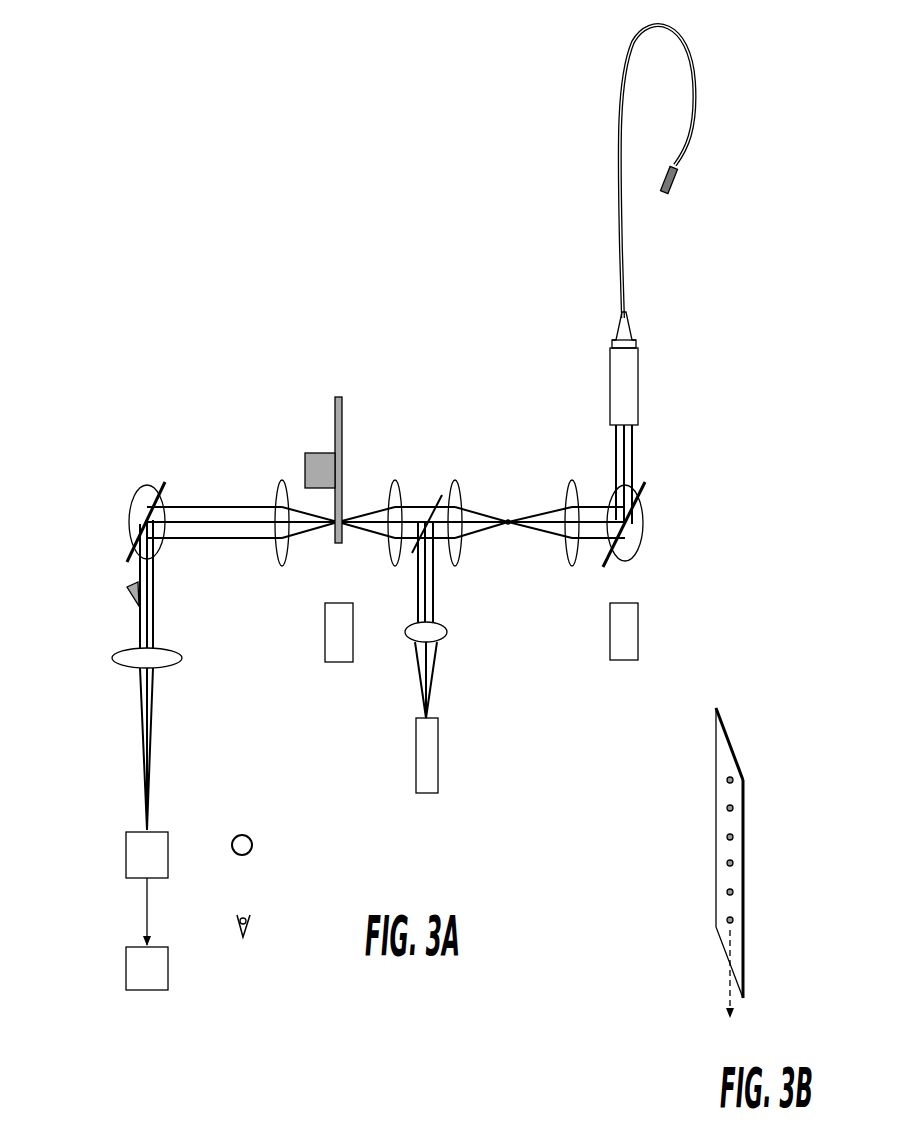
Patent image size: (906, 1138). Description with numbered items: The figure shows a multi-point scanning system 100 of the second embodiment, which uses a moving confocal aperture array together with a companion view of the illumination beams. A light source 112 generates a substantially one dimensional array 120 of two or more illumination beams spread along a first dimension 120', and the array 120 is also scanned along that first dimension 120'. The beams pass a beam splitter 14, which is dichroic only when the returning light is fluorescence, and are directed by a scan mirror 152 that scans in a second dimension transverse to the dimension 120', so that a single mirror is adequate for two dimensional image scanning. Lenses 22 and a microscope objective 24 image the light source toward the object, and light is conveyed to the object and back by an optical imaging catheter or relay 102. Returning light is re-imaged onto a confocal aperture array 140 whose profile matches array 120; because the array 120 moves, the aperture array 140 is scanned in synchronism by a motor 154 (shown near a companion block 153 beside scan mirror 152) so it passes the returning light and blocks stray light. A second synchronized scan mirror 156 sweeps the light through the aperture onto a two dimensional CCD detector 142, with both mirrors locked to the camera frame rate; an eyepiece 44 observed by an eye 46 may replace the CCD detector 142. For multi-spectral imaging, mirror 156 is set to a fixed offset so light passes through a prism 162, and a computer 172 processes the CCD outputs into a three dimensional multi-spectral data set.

In FIG. 3A, the multi-point scanning system 100 is at (151, 322).
In FIG. 3A, the optical imaging catheter or relay 102 is at (619, 135).
In FIG. 3A, the microscope objective 24 is at (610, 365).
In FIG. 3A, the confocal aperture array 140 is at (332, 407).
In FIG. 3A, the beam splitter 14 is at (428, 488).
In FIG. 3A, the lenses 22 is at (452, 480).
In FIG. 3A, the one dimensional array of illumination beams 120 is at (494, 501).
In FIG. 3B, the one dimensional array of illumination beams 120 is at (784, 853).
In FIG. 3A, the second synchronized scan mirror 156 is at (130, 508).
In FIG. 3A, the prism 162 is at (125, 596).
In FIG. 3A, the motor 154 is at (325, 632).
In FIG. 3A, the scan mirror 152 is at (640, 535).
In FIG. 3A, the scan mirror driver 153 is at (610, 625).
In FIG. 3A, the light source 112 is at (438, 746).
In FIG. 3A, the 2D CCD detector 142 is at (126, 850).
In FIG. 3A, the computer 172 is at (126, 968).
In FIG. 3A, the eyepiece 44 is at (246, 834).
In FIG. 3A, the eye 46 is at (250, 919).
In FIG. 3B, the first dimension 120' is at (755, 984).